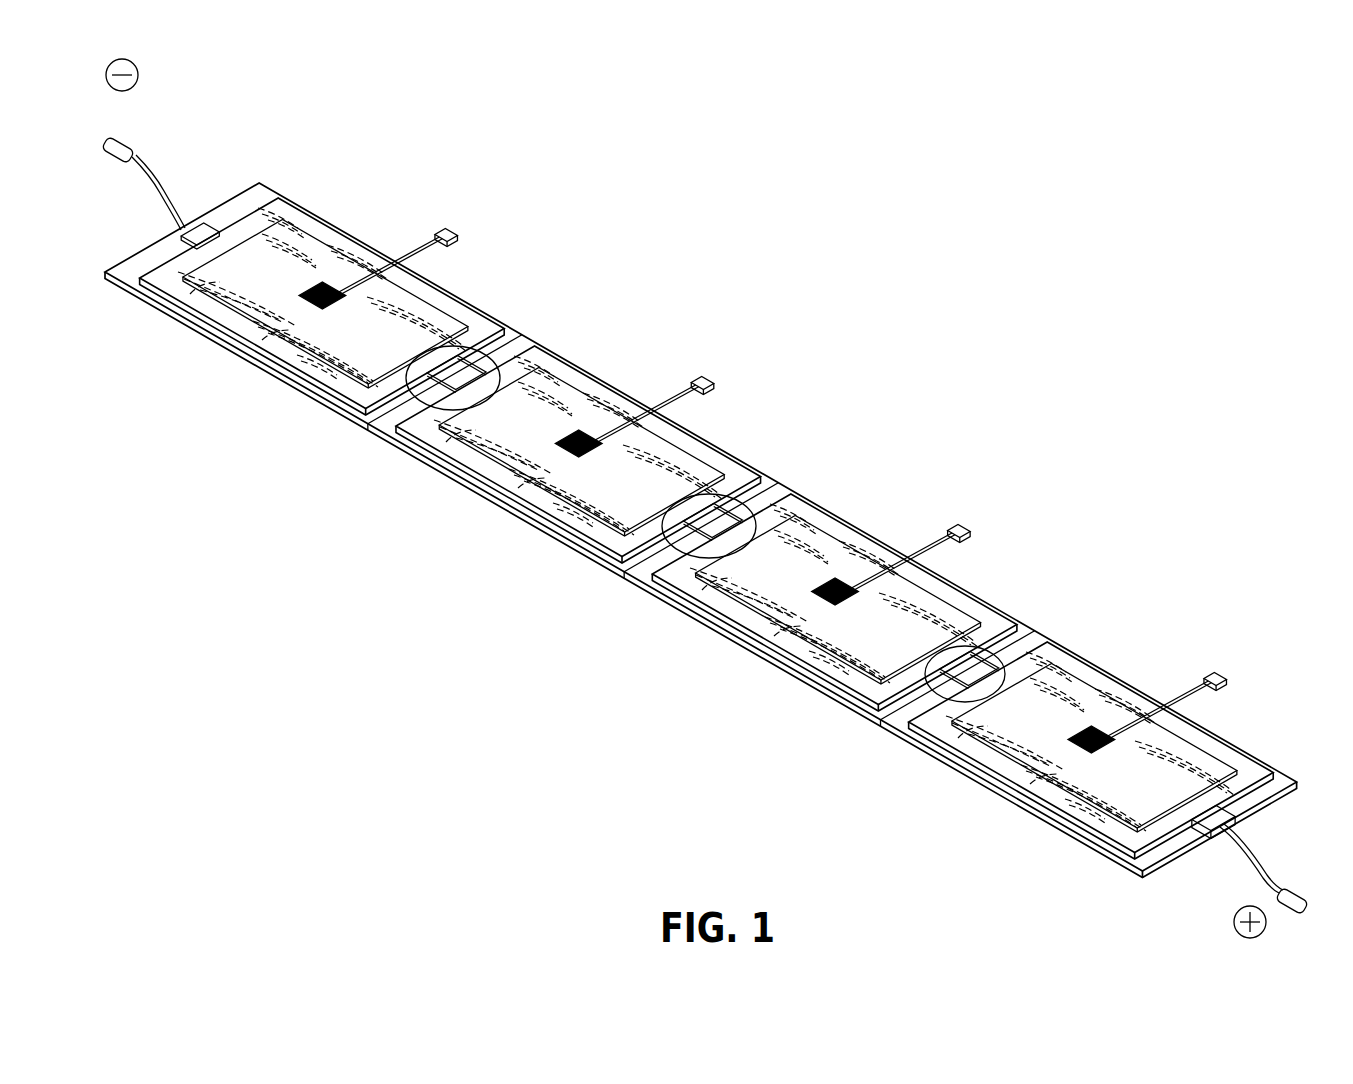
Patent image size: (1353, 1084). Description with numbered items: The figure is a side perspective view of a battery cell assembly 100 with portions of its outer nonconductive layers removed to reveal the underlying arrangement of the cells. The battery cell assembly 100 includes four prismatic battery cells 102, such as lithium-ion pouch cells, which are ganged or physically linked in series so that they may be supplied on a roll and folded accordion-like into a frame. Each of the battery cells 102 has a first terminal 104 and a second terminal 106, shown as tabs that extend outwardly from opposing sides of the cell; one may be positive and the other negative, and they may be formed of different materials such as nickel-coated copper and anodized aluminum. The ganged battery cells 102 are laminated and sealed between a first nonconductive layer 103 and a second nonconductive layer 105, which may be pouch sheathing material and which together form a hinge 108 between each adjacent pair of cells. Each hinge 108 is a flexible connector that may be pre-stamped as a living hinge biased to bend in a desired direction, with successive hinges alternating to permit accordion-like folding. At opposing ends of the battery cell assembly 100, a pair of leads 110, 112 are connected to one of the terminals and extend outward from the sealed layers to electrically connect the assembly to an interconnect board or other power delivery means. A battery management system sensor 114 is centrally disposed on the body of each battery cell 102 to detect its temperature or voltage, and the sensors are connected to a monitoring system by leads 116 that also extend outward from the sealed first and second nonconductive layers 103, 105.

The battery cell assembly 100 is at (780, 299).
The battery cells 102 is at (367, 428).
The first nonconductive layer 103 is at (261, 304).
The first terminal 104 is at (177, 228).
The second nonconductive layer 105 is at (264, 377).
The second terminal 106 is at (455, 370).
The hinge 108 is at (366, 433).
The lead 110 is at (124, 138).
The lead 112 is at (1293, 890).
The battery management system sensor 114 is at (323, 284).
The leads 116 is at (408, 250).